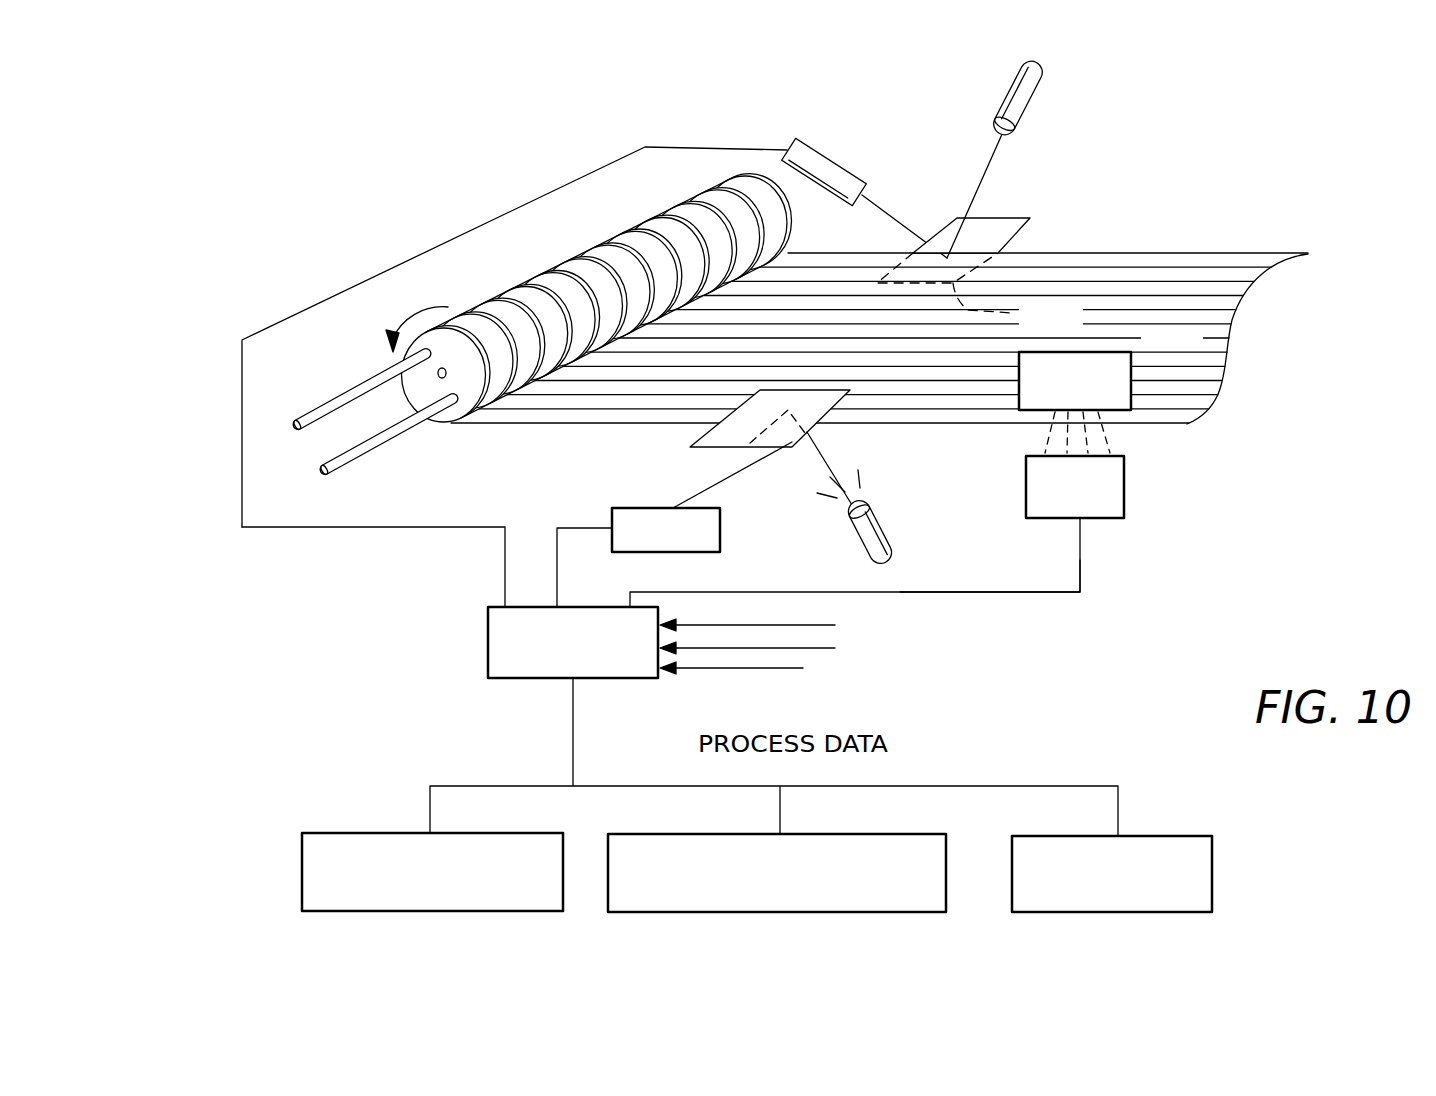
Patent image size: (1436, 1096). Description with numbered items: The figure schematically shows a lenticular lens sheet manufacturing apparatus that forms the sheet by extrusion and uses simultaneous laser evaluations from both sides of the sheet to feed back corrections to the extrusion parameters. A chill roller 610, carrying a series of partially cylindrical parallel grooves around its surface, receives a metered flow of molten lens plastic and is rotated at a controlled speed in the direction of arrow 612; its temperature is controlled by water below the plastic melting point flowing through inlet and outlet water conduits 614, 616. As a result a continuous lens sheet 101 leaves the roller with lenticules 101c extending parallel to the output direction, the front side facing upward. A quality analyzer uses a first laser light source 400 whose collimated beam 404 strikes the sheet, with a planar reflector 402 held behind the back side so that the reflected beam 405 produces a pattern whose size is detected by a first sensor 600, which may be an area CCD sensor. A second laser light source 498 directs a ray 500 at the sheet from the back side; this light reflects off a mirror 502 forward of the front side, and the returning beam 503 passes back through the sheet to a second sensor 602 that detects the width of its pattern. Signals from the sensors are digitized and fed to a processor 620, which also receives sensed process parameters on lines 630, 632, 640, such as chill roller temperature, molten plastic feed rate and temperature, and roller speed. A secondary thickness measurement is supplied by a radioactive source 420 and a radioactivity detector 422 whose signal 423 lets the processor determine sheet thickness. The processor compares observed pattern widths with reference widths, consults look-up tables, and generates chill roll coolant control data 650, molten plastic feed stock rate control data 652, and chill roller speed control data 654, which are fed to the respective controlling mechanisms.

The lenticular lens sheet 101 is at (1172, 412).
The lens surfaces (lenticules) 101c is at (1170, 270).
The first laser light source 400 is at (1032, 92).
The planar reflector 402 is at (980, 291).
The collimated beam 404 is at (985, 180).
The reflected beam 405 is at (897, 220).
The radioactive source 420 is at (1118, 362).
The radioactivity detector 422 is at (1110, 500).
The thickness signal 423 is at (1082, 590).
The second laser light source 498 is at (893, 540).
The ray 500 is at (835, 470).
The reflector (mirror) 502 is at (775, 443).
The reflected beam 503 is at (690, 483).
The first sensor 600 is at (822, 170).
The second sensor 602 is at (688, 548).
The chill roller 610 is at (562, 272).
The arrow (rotation direction) 612 is at (420, 303).
The inlet water conduit 614 is at (410, 437).
The outlet water conduit 616 is at (328, 400).
The processor 620 is at (498, 660).
The data input line 630 is at (828, 627).
The data input line 632 is at (820, 650).
The data input line 640 is at (790, 670).
The chill roll coolant control data 650 is at (326, 842).
The molten plastic feed stock rate control data 652 is at (921, 849).
The chill roller speed control data 654 is at (1191, 842).